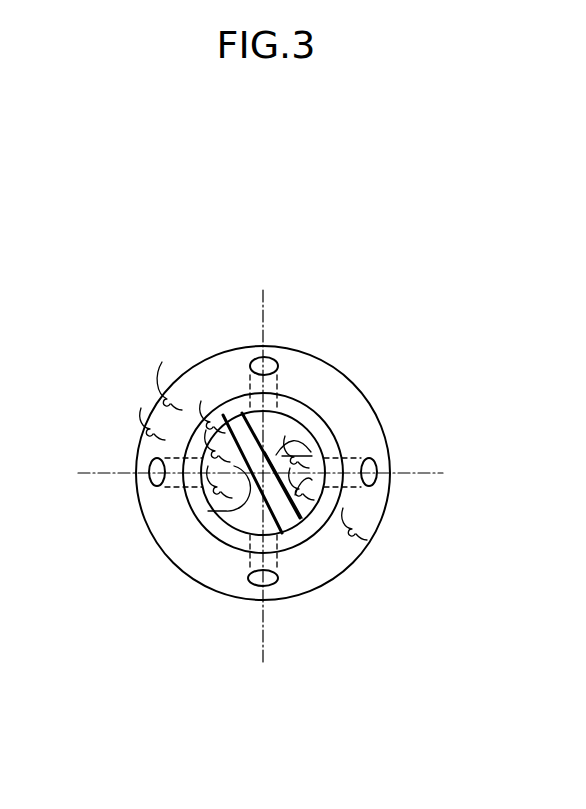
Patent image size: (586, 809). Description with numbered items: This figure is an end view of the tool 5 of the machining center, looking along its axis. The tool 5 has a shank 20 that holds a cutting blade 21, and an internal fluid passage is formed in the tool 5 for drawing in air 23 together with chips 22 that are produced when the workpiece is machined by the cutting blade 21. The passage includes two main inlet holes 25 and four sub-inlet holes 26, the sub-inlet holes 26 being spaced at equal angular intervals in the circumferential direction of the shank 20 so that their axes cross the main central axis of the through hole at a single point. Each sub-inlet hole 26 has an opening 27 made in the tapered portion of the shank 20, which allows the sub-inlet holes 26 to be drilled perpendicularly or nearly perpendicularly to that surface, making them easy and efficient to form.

The tool 5 is at (368, 387).
The shank 20 is at (374, 403).
The cutting blade 21 is at (311, 528).
The chips 22 is at (132, 421).
The air 23 is at (270, 362).
The main inlet hole 25 is at (214, 430).
The sub-inlet hole 26 is at (288, 377).
The opening 27 is at (278, 366).